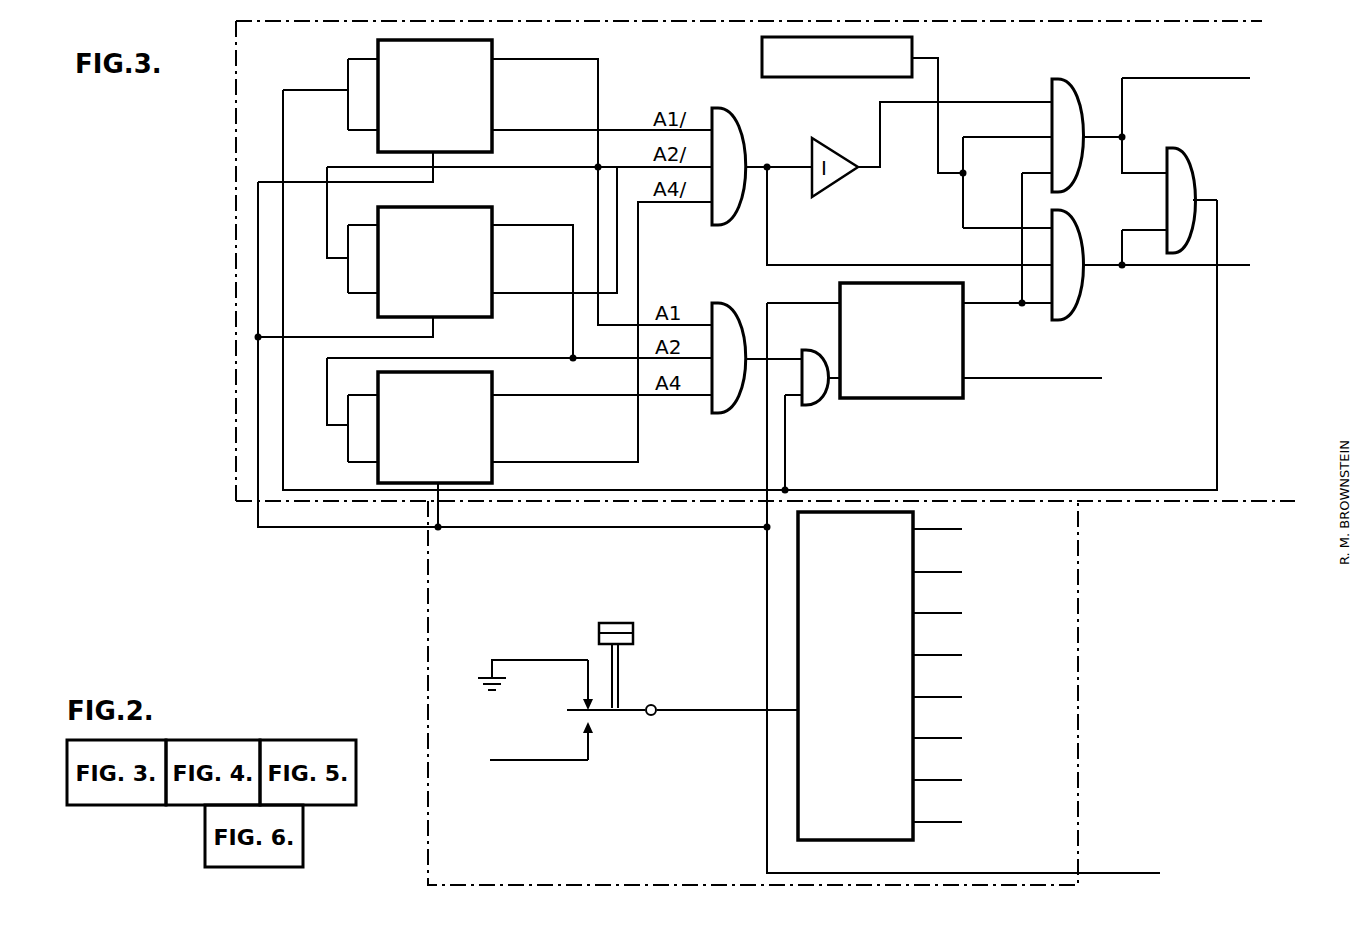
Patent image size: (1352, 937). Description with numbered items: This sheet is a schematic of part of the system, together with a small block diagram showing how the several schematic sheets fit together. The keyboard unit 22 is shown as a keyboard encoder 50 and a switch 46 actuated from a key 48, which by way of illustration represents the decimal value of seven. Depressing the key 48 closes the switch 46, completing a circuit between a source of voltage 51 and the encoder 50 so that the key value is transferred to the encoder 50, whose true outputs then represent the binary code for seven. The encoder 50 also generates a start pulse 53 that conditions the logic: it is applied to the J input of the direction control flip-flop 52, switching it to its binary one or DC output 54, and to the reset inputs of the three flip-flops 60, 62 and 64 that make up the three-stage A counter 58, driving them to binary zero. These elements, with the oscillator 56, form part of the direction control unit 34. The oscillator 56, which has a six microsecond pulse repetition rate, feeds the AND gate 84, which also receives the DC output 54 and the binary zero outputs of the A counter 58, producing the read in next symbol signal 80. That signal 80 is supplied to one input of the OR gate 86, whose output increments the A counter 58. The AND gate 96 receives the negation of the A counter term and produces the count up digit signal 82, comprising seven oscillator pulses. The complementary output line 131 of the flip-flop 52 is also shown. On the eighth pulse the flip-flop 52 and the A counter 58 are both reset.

The A counter 58 is at (474, 257).
The flip-flop 60 is at (494, 100).
The flip-flop 62 is at (494, 268).
The flip-flop 64 is at (494, 433).
The oscillator 56 is at (837, 78).
The start signal 53 is at (782, 302).
The direction control flip-flop 52 is at (950, 400).
The DC signal level output 54 is at (1000, 306).
The DC/ output line 131 is at (1062, 381).
The AND gate 96 is at (1076, 94).
The count up digit signal 82 is at (1170, 78).
The OR gate 86 is at (1190, 185).
The read in next symbol signal 80 is at (1235, 265).
The AND gate 84 is at (1080, 302).
The direction control unit 34 is at (236, 480).
The keyboard unit 22 is at (428, 812).
The key 48 is at (620, 681).
The switch 46 is at (590, 718).
The keyboard encoder 50 is at (798, 660).
The source of voltage 51 is at (448, 775).